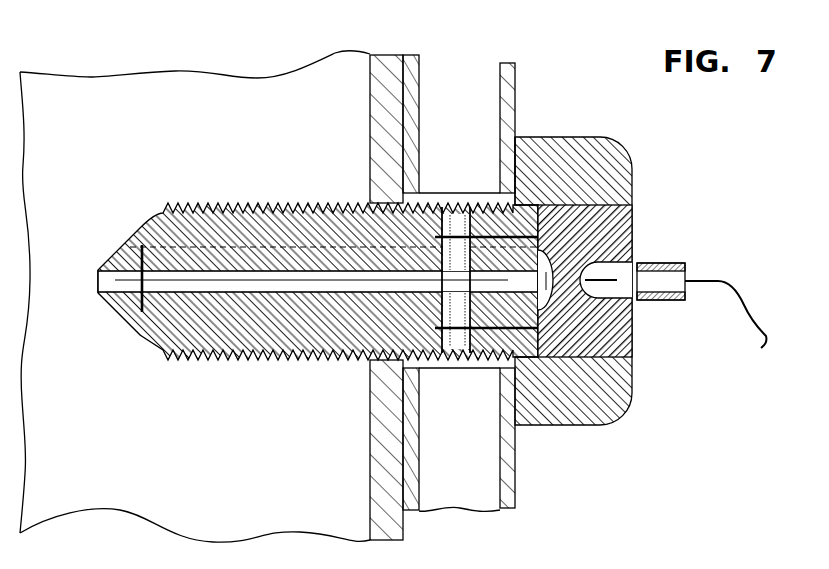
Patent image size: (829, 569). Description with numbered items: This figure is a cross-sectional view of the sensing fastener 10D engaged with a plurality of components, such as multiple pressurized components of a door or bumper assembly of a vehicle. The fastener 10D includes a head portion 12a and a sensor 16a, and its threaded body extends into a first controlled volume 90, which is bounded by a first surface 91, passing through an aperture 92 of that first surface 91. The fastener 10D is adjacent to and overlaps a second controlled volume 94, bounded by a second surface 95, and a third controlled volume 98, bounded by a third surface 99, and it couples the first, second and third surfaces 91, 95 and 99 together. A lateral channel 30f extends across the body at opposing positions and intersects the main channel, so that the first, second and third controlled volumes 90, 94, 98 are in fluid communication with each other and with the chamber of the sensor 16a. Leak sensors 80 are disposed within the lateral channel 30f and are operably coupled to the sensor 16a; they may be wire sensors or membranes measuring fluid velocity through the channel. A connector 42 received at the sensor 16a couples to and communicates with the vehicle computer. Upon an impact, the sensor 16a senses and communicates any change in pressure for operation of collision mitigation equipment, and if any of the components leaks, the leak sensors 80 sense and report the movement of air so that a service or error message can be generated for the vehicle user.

The sensing fastener 10D is at (575, 120).
The head portion 12a is at (636, 174).
The sensor 16a is at (636, 230).
The lateral channel 30f is at (459, 198).
The connector 42 is at (722, 279).
The leak sensors 80 is at (455, 236).
The first controlled volume 90 is at (218, 132).
The first surface 91 is at (378, 60).
The aperture 92 is at (372, 351).
The second controlled volume 94 is at (452, 99).
The second surface 95 is at (413, 73).
The third controlled volume 98 is at (458, 446).
The third surface 99 is at (515, 465).